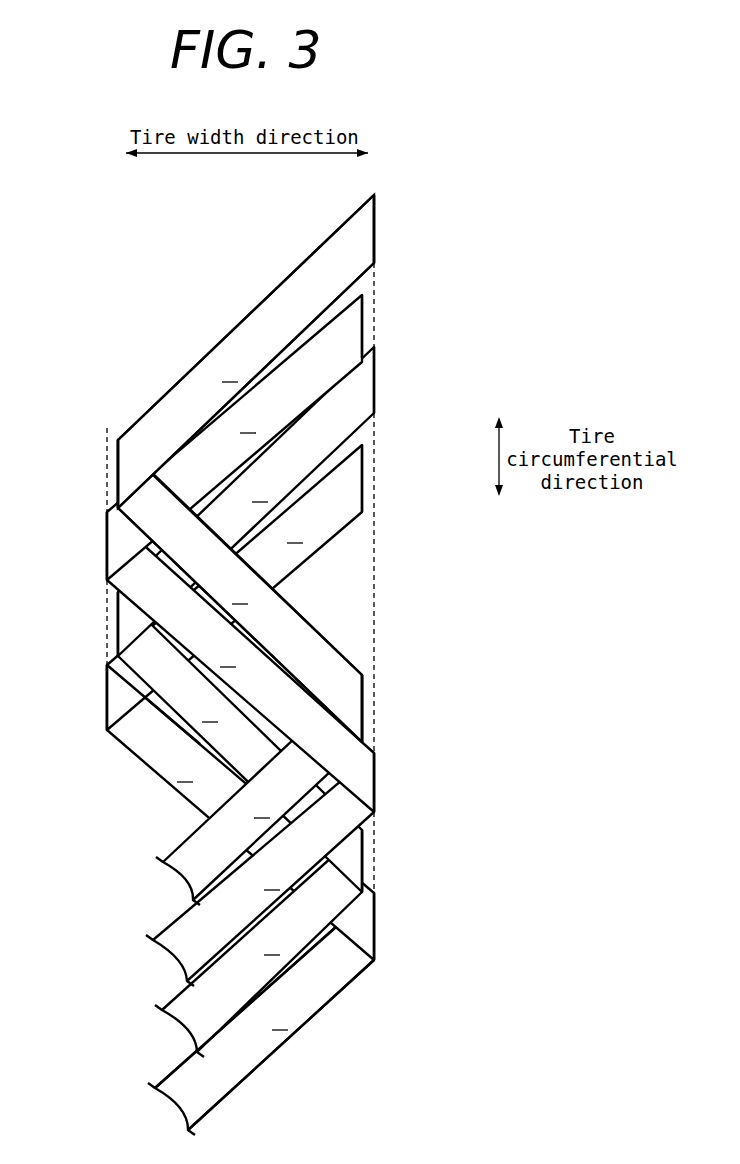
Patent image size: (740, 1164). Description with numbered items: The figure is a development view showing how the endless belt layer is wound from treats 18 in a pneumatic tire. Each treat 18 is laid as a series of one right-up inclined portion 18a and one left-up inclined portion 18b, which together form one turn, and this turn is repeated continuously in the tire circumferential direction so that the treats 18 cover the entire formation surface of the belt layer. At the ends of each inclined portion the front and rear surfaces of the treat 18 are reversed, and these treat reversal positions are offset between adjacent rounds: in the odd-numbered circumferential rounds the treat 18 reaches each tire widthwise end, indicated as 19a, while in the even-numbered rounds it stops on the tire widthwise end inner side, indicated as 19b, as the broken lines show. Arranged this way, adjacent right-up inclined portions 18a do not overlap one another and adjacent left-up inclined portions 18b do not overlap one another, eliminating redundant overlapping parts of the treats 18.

The treat 18 is at (170, 833).
The right-up inclined portion 18a is at (341, 332).
The left-up inclined portion 18b is at (353, 660).
The treat reversal position at tire widthwise end 19a is at (377, 222).
The treat reversal position on tire widthwise end inner side 19b is at (363, 317).